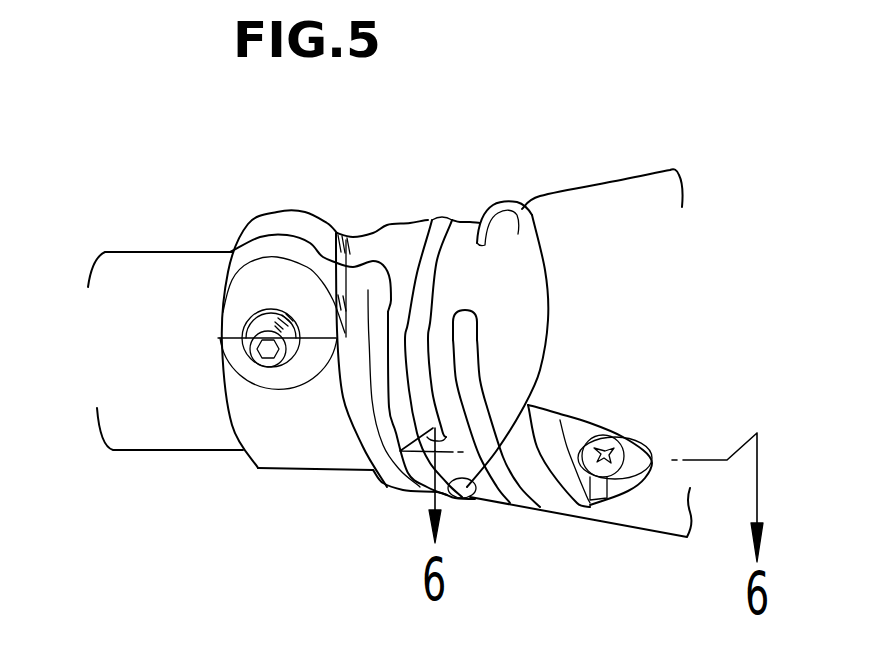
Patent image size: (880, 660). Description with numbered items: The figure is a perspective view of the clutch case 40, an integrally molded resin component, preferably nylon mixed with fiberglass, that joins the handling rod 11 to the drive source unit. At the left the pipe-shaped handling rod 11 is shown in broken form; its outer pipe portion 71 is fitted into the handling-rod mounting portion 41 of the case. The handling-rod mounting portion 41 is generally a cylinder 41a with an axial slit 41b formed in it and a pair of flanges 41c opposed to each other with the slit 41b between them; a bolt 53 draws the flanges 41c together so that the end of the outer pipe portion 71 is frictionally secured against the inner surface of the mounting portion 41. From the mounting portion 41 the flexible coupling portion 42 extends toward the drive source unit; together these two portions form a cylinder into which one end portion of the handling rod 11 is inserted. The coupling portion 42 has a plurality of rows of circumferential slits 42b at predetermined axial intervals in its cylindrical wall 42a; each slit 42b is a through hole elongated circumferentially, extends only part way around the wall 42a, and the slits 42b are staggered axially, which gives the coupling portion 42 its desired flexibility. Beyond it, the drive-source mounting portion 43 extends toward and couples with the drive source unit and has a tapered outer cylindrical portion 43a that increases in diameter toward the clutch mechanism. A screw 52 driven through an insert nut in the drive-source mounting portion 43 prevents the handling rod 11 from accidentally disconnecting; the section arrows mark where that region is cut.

The handling rod 11 is at (131, 235).
The outer pipe portion 71 is at (168, 288).
The clutch case 40 is at (716, 142).
The handling-rod mounting portion 41 is at (338, 486).
The cylindrical body 41a is at (297, 450).
The axial slit 41b is at (277, 237).
The flanges 41c is at (315, 283).
The flexible coupling portion 42 is at (553, 125).
The cylindrical wall 42a is at (476, 230).
The circumferential slits 42b is at (380, 337).
The drive-source mounting portion 43 is at (620, 171).
The tapered outer cylindrical portion 43a is at (663, 518).
The screw 52 is at (602, 477).
The bolt 53 is at (270, 368).